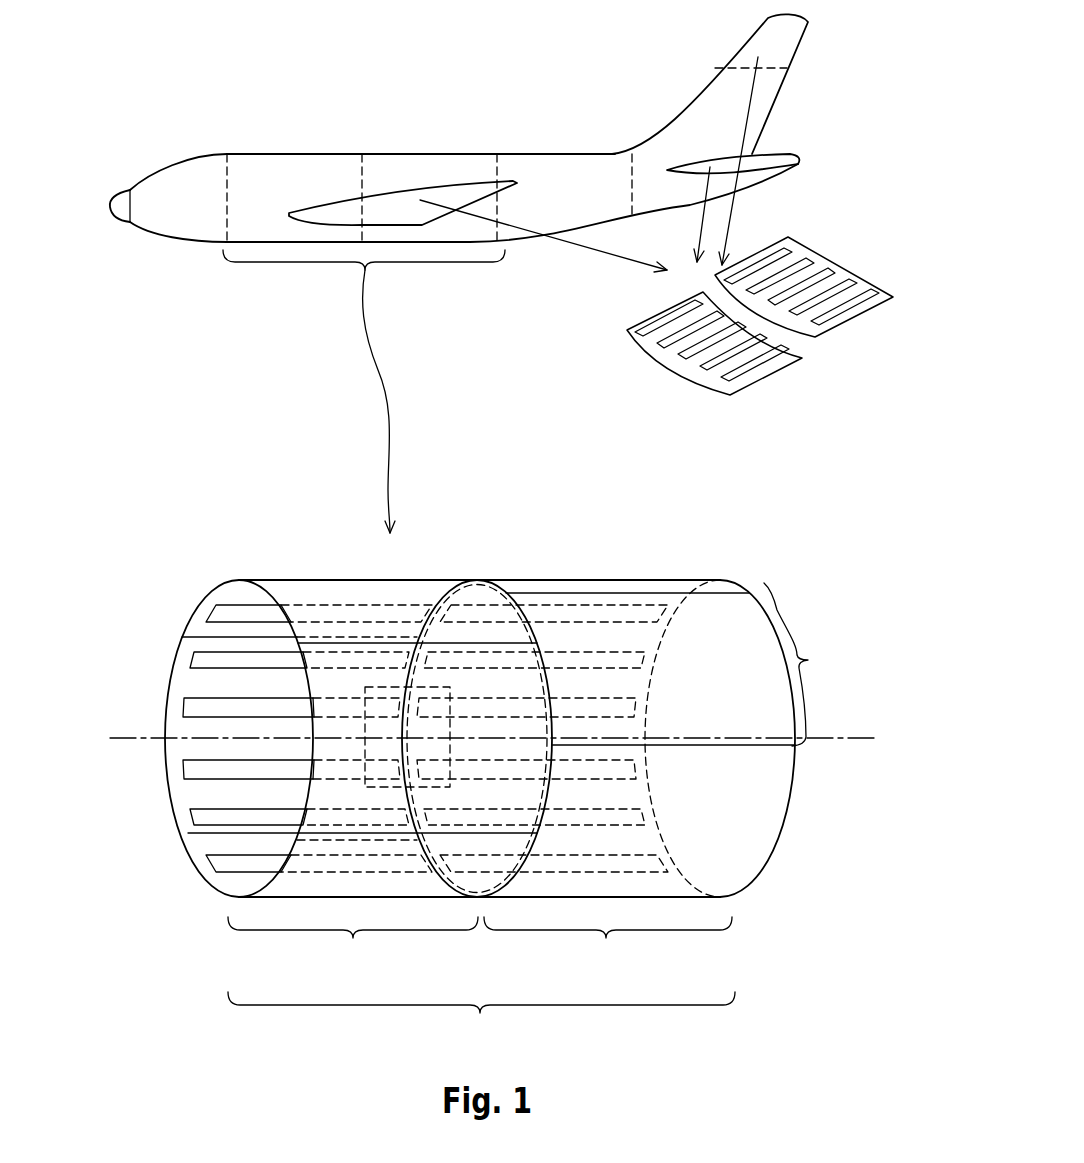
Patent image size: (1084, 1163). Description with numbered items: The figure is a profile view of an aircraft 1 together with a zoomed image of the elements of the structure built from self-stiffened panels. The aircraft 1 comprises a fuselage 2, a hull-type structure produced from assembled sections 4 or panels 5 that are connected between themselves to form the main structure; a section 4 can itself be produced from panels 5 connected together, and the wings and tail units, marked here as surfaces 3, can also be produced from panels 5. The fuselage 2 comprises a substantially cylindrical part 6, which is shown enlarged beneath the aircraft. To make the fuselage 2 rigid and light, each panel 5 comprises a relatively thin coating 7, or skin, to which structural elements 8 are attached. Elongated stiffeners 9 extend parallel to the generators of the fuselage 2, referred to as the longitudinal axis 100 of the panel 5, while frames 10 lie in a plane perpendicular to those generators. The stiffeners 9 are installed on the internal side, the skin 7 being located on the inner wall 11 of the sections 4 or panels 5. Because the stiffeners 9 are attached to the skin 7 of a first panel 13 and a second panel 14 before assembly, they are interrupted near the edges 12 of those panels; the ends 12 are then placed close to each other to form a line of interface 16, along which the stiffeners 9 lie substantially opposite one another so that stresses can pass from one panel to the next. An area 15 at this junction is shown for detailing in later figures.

The aircraft 1 is at (283, 154).
The fuselage 2 is at (425, 154).
The aerodynamic surface (wing, fin, stabilizer) 3 is at (387, 200).
The section 4 is at (470, 154).
The panel 5 is at (808, 248).
The cylindrical part 6 is at (481, 810).
The coating 7 is at (695, 362).
The structural elements 8 is at (712, 365).
The stiffeners 9 is at (742, 371).
The frames 10 is at (462, 592).
The inner wall 11 is at (233, 848).
The edges 12 is at (650, 362).
The first panel 13 is at (770, 376).
The second panel 14 is at (862, 316).
The area 15 is at (387, 685).
The line of interface 16 is at (362, 154).
The longitudinal axis 100 is at (846, 742).